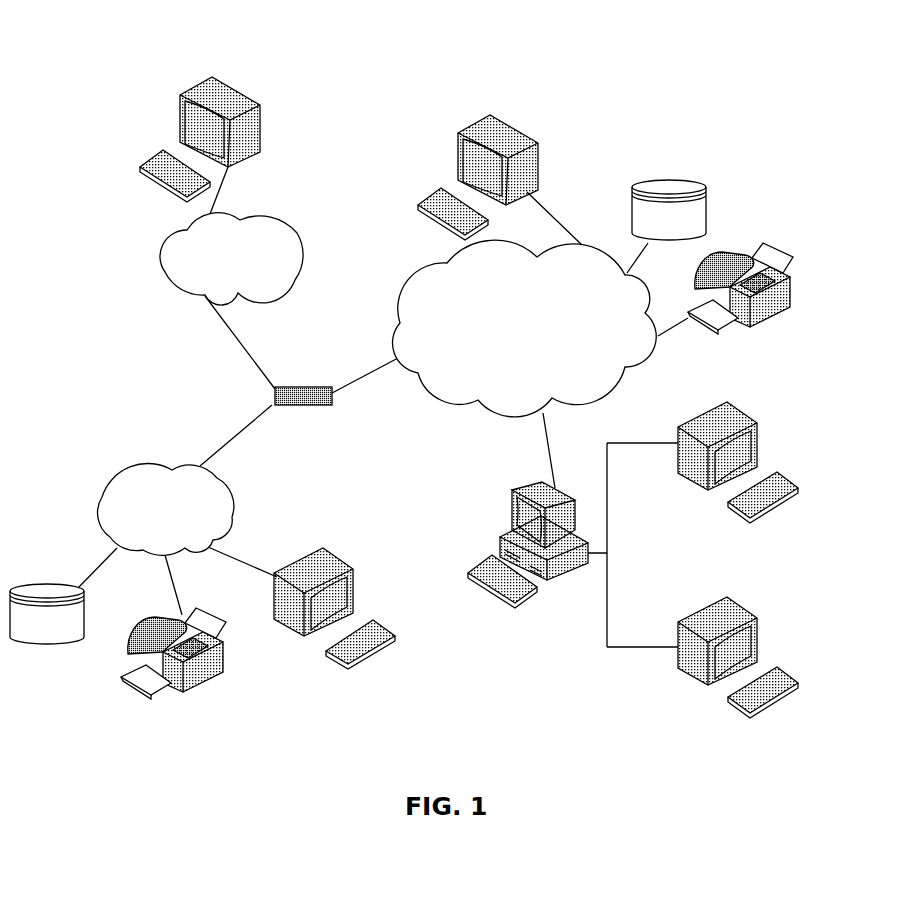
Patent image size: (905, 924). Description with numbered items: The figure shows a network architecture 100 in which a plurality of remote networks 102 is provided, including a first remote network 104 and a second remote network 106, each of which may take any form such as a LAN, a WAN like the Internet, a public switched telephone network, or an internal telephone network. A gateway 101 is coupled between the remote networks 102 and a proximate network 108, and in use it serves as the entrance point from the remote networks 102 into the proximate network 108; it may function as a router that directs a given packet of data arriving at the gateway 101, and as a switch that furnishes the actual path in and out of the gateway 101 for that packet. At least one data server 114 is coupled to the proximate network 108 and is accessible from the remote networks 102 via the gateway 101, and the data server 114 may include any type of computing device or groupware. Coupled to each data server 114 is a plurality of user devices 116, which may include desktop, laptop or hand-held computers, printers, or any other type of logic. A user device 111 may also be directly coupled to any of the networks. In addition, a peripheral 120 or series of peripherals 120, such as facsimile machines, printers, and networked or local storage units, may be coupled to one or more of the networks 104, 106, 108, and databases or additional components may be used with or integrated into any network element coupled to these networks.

The architecture 100 is at (124, 66).
The gateway 101 is at (283, 386).
The remote networks 102 is at (149, 308).
The first remote network 104 is at (99, 484).
The second remote network 106 is at (297, 232).
The proximate network 108 is at (620, 387).
The user device 111 is at (501, 177).
The data server 114 is at (510, 503).
The user devices 116 is at (469, 397).
The peripheral 120 is at (421, 441).